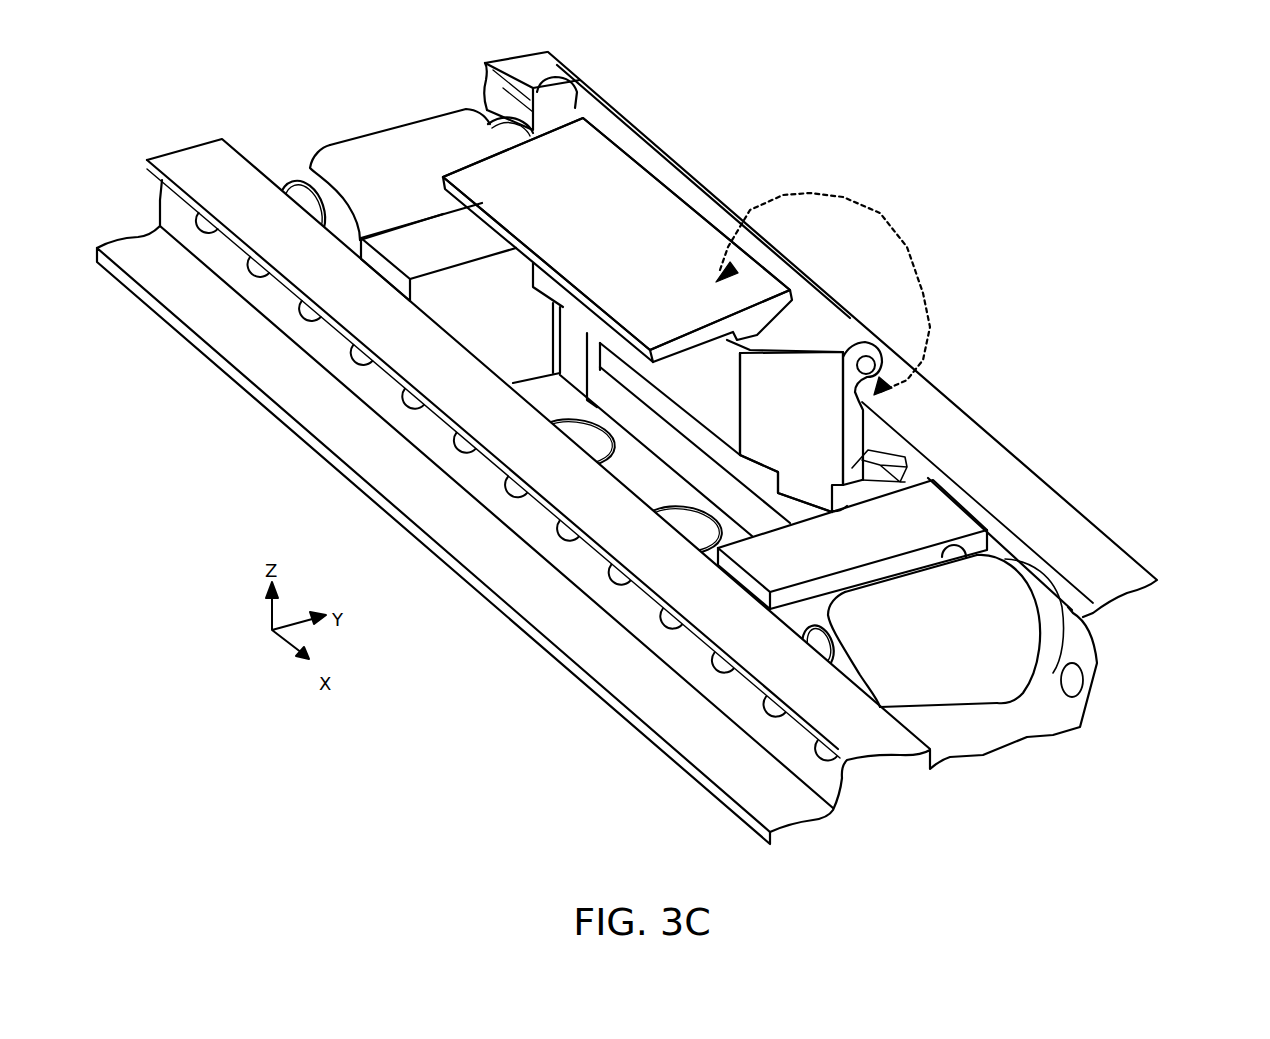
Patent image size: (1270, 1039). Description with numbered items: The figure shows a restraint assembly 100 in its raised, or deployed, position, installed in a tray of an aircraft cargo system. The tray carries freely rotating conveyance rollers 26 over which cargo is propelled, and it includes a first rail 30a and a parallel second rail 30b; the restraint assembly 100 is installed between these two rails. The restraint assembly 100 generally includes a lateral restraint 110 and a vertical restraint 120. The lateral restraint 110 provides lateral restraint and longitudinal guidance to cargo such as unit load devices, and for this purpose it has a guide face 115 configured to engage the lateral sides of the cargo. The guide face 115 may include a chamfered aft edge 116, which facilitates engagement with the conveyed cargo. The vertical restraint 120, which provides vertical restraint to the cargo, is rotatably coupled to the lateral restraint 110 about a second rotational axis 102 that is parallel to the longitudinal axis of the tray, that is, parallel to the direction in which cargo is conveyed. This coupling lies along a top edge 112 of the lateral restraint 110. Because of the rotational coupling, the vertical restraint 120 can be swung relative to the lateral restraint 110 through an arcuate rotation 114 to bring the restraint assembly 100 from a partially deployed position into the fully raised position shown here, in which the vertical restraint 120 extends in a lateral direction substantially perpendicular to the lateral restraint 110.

The conveyance rollers 26 is at (422, 172).
The first rail 30a is at (1083, 543).
The second rail 30b is at (850, 733).
The restraint assembly 100 is at (753, 192).
The second rotational axis 102 is at (867, 410).
The lateral restraint 110 is at (853, 458).
The top edge 112 is at (570, 107).
The arcuate rotation 114 is at (912, 257).
The guide face 115 is at (716, 392).
The chamfered aft edge 116 is at (822, 419).
The vertical restraint 120 is at (570, 240).